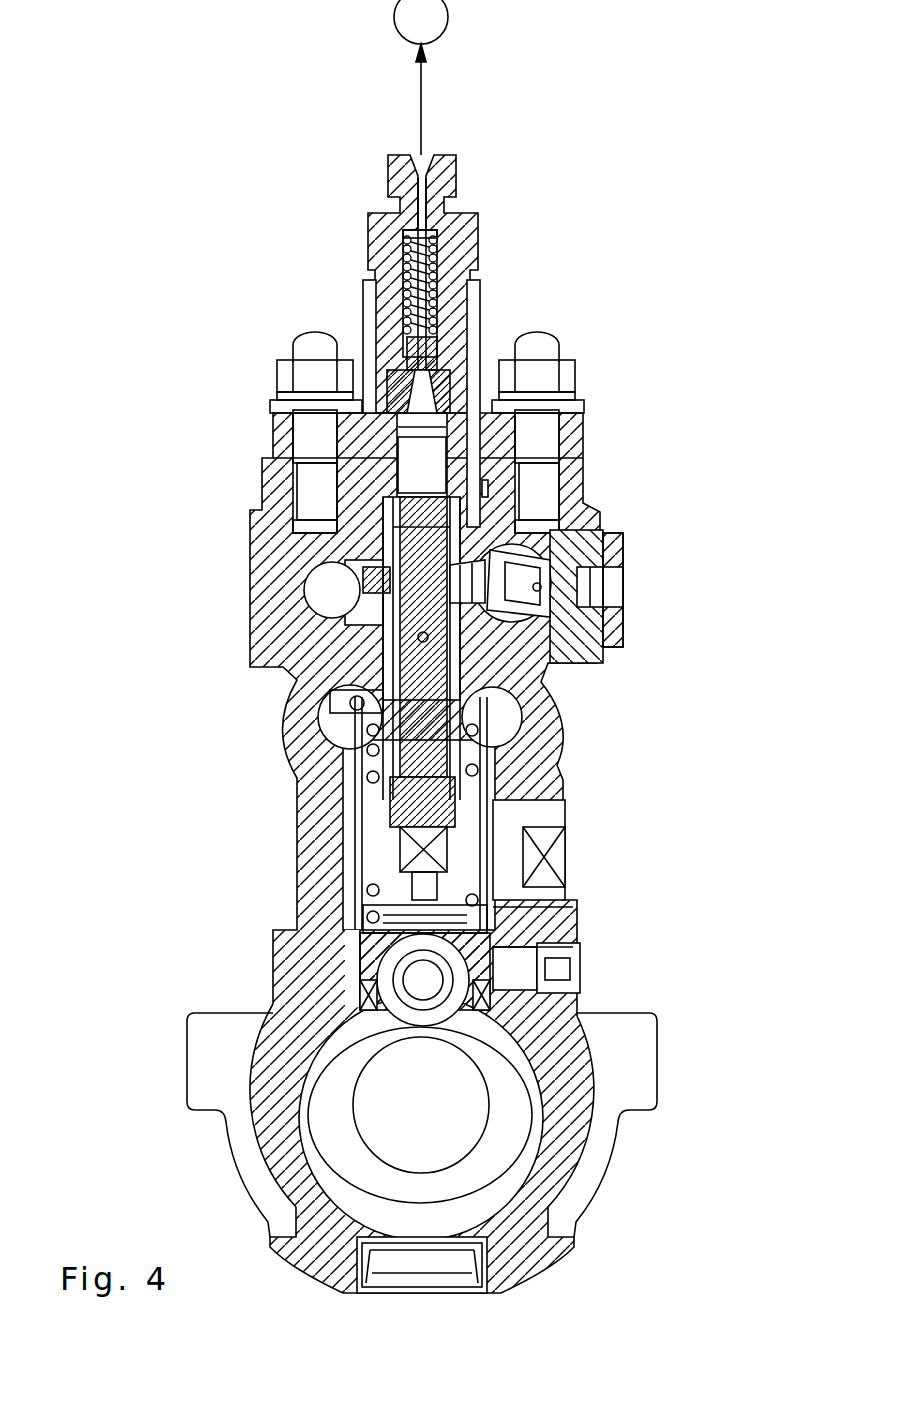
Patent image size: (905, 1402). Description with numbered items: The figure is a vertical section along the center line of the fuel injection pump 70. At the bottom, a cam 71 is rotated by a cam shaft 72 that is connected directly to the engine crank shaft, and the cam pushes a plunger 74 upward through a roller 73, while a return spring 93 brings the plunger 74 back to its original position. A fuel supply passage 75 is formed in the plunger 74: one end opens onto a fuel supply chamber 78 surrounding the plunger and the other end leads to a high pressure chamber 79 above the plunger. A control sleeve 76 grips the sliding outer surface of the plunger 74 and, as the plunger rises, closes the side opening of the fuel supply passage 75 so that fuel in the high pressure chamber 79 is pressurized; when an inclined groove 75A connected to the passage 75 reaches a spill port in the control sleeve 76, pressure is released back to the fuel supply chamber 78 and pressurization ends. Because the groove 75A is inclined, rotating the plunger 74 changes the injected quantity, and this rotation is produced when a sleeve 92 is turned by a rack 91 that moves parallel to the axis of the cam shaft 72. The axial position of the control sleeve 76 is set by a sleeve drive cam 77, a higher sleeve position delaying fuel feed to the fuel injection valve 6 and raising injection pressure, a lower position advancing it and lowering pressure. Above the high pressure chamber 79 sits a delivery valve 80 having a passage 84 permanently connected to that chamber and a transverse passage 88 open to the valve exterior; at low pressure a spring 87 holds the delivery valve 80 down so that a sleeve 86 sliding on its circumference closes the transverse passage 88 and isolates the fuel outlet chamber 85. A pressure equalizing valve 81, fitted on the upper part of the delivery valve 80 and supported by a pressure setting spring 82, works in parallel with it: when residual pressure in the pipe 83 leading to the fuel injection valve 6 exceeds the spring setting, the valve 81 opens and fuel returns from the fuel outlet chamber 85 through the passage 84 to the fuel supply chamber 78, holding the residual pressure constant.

The fuel injection valve 6 is at (448, 15).
The pipe 83 is at (421, 100).
The fuel outlet chamber 85 is at (383, 253).
The spring 87 is at (437, 257).
The transverse passage 88 is at (395, 330).
The pressure equalizing valve 81 is at (465, 290).
The delivery valve 80 is at (400, 413).
The pressure setting spring 82 is at (468, 325).
The sleeve 86 is at (455, 375).
The passage 84 is at (385, 415).
The high pressure chamber 79 is at (427, 467).
The fuel supply chamber 78 is at (590, 523).
The sleeve drive cam 77 is at (470, 567).
The groove 75A is at (407, 596).
The control sleeve 76 is at (428, 636).
The fuel supply passage 75 is at (457, 670).
The rack 91 is at (340, 707).
The return spring 93 is at (367, 777).
The plunger 74 is at (437, 700).
The sleeve 92 is at (350, 803).
The fuel injection pump 70 is at (580, 925).
The roller 73 is at (397, 1020).
The cam 71 is at (333, 1143).
The cam shaft 72 is at (467, 1117).